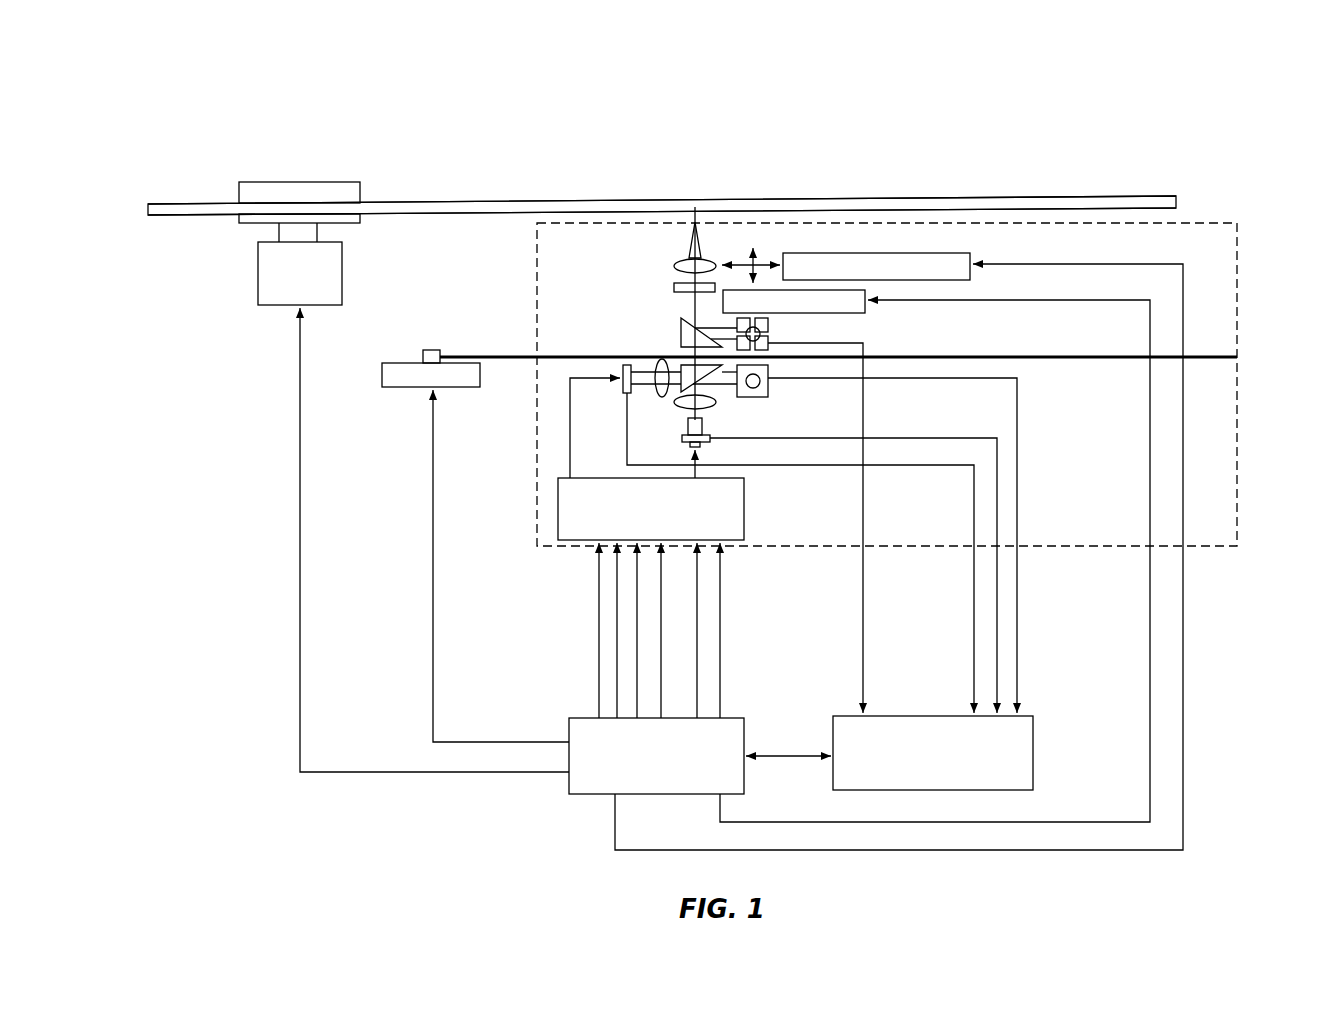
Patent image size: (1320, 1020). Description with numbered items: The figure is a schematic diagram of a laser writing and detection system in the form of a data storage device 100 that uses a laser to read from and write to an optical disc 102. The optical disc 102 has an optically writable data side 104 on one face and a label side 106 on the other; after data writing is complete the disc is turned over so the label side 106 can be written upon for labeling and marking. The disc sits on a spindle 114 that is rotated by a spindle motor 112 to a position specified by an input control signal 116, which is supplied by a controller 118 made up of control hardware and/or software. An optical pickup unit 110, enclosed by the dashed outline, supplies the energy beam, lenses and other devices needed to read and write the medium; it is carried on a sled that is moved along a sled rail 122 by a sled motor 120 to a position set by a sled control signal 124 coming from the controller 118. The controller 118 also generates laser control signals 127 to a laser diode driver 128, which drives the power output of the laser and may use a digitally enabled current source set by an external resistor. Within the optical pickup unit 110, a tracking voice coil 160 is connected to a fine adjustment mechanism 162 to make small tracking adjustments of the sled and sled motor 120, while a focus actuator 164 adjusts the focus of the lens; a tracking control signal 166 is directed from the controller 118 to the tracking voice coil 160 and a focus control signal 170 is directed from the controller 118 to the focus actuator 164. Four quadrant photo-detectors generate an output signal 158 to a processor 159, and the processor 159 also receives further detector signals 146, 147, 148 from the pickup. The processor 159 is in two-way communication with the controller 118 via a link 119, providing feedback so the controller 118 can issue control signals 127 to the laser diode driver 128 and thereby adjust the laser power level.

The data storage device 100 is at (515, 172).
The optical disc 102 is at (145, 207).
The optically writable data side 104 is at (186, 203).
The label side 106 is at (219, 218).
The optical pickup unit (OPU) 110 is at (1237, 258).
The spindle motor 112 is at (257, 288).
The spindle 114 is at (303, 181).
The input control signal 116 is at (300, 372).
The controller 118 is at (744, 728).
The link 119 is at (797, 757).
The sled motor 120 is at (395, 390).
The sled rail 122 is at (516, 360).
The sled control signal 124 is at (433, 497).
The laser control signals 127 is at (592, 647).
The laser diode driver 128 is at (744, 512).
The laser power monitor signal 146 is at (973, 582).
The detector signal 147 is at (997, 630).
The photodetector signal 148 is at (1017, 620).
The output signal 158 is at (863, 610).
The processor 159 is at (1033, 758).
The tracking voice coil 160 is at (860, 253).
The fine adjustment mechanism 162 is at (770, 250).
The focus actuator 164 is at (865, 312).
The tracking control signal 166 is at (1060, 264).
The focus control signal 170 is at (1030, 300).